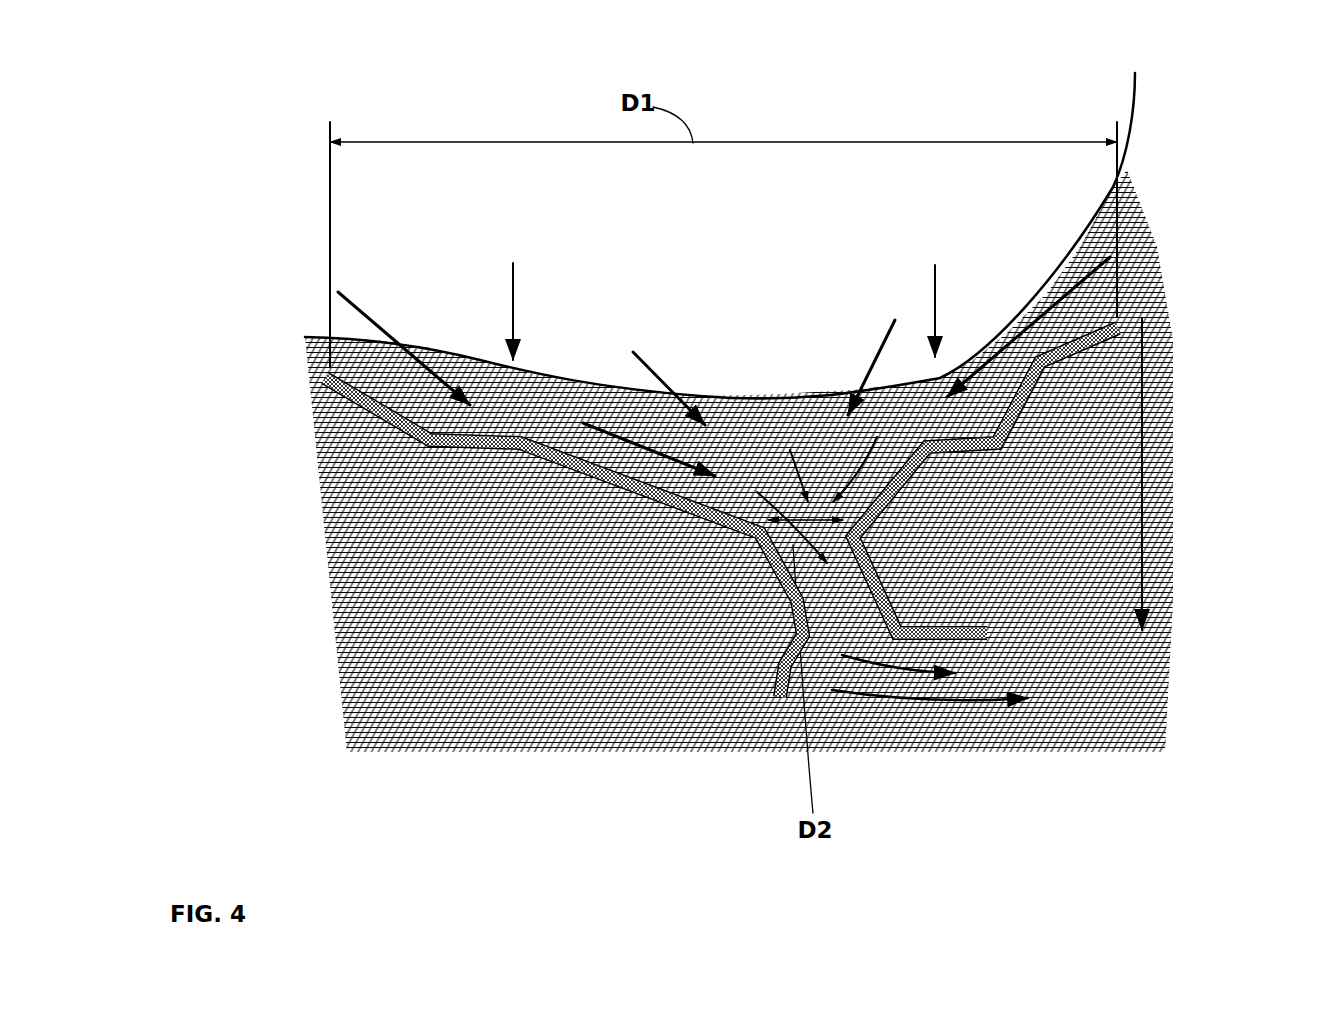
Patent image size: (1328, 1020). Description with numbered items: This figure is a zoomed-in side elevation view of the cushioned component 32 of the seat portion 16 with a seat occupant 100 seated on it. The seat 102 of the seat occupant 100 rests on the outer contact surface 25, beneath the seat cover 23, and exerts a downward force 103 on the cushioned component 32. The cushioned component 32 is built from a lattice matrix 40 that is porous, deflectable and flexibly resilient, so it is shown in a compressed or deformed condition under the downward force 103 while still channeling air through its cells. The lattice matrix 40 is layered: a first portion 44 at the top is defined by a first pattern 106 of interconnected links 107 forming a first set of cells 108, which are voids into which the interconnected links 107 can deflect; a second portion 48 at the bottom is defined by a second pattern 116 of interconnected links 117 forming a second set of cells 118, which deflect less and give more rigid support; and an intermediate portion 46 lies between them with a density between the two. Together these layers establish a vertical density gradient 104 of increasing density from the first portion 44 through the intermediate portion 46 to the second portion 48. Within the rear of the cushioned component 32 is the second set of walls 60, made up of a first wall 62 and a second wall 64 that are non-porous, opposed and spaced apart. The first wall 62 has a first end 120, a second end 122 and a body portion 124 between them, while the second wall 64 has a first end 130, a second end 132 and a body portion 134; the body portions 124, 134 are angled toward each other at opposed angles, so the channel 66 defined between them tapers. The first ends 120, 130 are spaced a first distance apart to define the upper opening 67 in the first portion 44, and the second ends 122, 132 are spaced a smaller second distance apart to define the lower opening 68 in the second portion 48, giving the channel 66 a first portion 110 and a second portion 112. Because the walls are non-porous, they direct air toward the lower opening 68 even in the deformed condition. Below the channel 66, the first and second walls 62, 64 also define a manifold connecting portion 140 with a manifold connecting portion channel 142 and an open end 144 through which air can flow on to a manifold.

The seat portion 16 is at (165, 368).
The seat cover 23 is at (403, 347).
The outer contact surface 25 is at (480, 357).
The cushioned component 32 is at (288, 565).
The lattice matrix 40 is at (303, 452).
The first portion 44 is at (373, 366).
The intermediate portion 46 is at (357, 472).
The second portion 48 is at (397, 695).
The second set of walls 60 is at (557, 497).
The first wall 62 is at (485, 462).
The second wall 64 is at (1007, 428).
The channel 66 is at (735, 446).
The upper opening 67 is at (327, 352).
The lower opening 68 is at (767, 593).
The seat occupant 100 is at (1153, 93).
The seat 102 is at (1003, 195).
The downward force 103 is at (513, 308).
The density gradient 104 is at (1150, 570).
The first pattern 106 is at (1143, 162).
The interconnected links 107 is at (1160, 303).
The first set of cells 108 is at (1147, 250).
The first portion of channel 110 is at (1112, 358).
The second portion of channel 112 is at (880, 532).
The second pattern 116 is at (1187, 700).
The interconnected links 117 is at (1155, 728).
The second set of cells 118 is at (1153, 678).
The first end 120 is at (310, 375).
The second end 122 is at (740, 550).
The body portion 124 is at (615, 475).
The first end 130 is at (1147, 323).
The second end 132 is at (868, 545).
The body portion 134 is at (963, 458).
The manifold connecting portion 140 is at (745, 565).
The manifold connecting portion channel 142 is at (835, 540).
The open end 144 is at (780, 700).